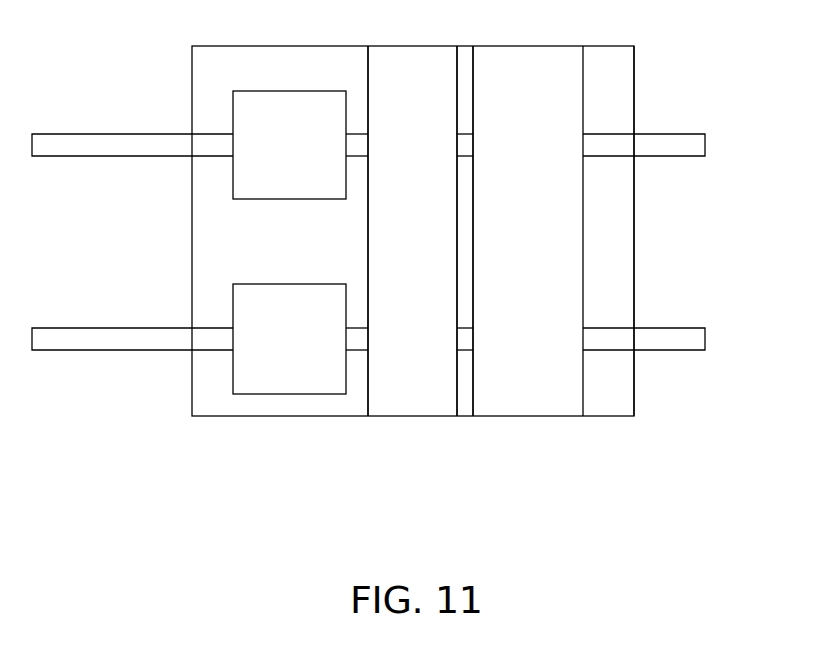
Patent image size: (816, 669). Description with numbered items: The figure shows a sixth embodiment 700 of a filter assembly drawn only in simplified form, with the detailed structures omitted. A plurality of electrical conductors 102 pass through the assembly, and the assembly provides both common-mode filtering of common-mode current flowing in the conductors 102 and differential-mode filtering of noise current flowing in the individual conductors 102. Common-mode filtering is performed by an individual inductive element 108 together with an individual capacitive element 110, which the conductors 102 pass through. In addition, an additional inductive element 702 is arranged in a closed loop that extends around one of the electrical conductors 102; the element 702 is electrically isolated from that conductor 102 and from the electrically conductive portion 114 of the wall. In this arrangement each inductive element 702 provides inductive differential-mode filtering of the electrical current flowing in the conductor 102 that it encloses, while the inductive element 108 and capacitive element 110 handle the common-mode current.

The filter assembly embodiment 700 is at (269, 444).
The additional inductive element 702 is at (315, 158).
The capacitive element 110 is at (432, 252).
The electrically conductive portion of the wall 114 is at (409, 416).
The inductive element 108 is at (558, 246).
The electrical conductors 102 is at (705, 145).